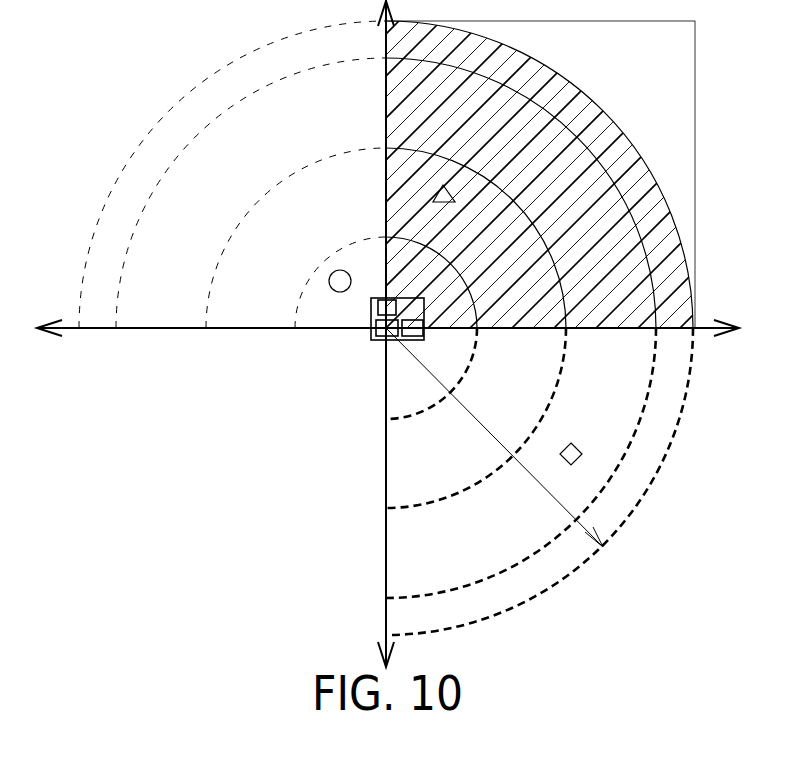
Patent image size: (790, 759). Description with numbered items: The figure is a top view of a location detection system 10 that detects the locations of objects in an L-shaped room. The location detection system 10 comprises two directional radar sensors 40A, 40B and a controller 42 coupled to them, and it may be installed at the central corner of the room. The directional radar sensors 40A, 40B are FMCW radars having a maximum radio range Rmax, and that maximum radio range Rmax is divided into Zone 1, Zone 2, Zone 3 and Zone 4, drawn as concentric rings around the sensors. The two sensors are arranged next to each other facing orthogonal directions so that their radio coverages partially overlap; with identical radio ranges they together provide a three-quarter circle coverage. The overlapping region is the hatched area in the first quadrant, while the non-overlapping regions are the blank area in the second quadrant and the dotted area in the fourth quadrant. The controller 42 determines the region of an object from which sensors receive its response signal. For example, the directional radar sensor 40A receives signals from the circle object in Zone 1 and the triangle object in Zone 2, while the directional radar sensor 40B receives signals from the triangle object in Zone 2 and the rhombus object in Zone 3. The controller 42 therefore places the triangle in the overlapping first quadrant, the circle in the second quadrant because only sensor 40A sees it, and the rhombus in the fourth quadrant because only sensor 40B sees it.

The Zone 1 is at (386, 328).
The Zone 2 is at (386, 328).
The Zone 3 is at (386, 328).
The Zone 4 is at (386, 328).
The location detection system 10 is at (371, 318).
The directional radar sensor 40A is at (384, 299).
The directional radar sensor 40B is at (425, 333).
The controller 42 is at (382, 338).
The maximum radio range Rmax is at (540, 485).